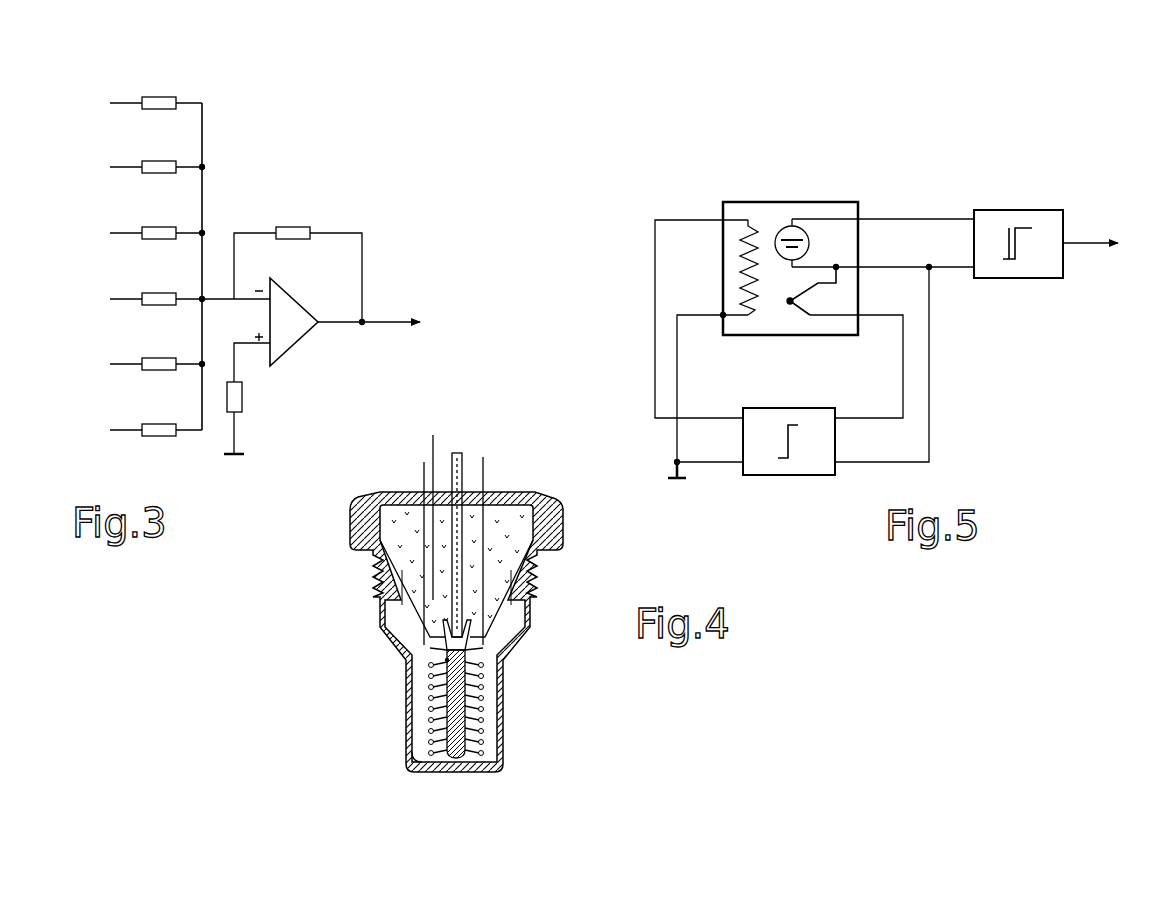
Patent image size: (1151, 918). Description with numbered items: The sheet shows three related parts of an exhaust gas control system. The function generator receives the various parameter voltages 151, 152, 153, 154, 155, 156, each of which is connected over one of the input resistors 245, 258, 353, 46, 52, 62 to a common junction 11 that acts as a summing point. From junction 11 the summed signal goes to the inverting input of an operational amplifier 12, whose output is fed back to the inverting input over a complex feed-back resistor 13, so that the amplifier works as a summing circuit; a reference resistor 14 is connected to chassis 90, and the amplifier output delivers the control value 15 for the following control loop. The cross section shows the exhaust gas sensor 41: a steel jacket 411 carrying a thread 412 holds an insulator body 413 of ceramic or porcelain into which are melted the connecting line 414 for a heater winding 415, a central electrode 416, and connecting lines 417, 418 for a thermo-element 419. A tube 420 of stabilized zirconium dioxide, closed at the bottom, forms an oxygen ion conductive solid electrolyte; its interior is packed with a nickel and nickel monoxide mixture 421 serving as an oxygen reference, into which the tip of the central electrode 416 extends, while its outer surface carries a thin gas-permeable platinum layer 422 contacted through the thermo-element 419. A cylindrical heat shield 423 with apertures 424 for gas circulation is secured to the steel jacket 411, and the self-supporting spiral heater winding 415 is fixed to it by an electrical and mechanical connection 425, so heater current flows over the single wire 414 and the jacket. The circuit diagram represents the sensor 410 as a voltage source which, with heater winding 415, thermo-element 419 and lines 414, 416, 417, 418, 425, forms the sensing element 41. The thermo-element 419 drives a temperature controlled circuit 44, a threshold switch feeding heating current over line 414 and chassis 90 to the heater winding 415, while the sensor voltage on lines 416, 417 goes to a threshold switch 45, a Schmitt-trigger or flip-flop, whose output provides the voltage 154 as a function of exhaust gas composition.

In FIG. 3, the common junction 11 is at (204, 303).
In FIG. 3, the operational amplifier 12 is at (296, 335).
In FIG. 3, the complex feed-back resistor 13 is at (290, 232).
In FIG. 3, the reference resistor 14 is at (243, 398).
In FIG. 3, the control value 15 is at (373, 306).
In FIG. 4, the exhaust gas sensor 41 is at (455, 632).
In FIG. 5, the exhaust gas sensor 41 is at (828, 193).
In FIG. 5, the temperature controlled circuit 44 is at (780, 470).
In FIG. 5, the threshold switch 45 is at (1015, 211).
In FIG. 3, the input resistor 46 is at (158, 297).
In FIG. 3, the input resistor 52 is at (158, 360).
In FIG. 3, the input resistor 62 is at (156, 426).
In FIG. 3, the chassis 90 is at (236, 458).
In FIG. 5, the chassis 90 is at (680, 481).
In FIG. 3, the parameter voltage 151 is at (115, 104).
In FIG. 3, the parameter voltage 152 is at (115, 168).
In FIG. 3, the parameter voltage 153 is at (115, 234).
In FIG. 3, the parameter voltage 154 is at (115, 300).
In FIG. 5, the parameter voltage 154 is at (1112, 247).
In FIG. 3, the parameter voltage 155 is at (115, 365).
In FIG. 3, the parameter voltage 156 is at (115, 431).
In FIG. 3, the input resistor 245 is at (157, 101).
In FIG. 3, the input resistor 258 is at (163, 166).
In FIG. 3, the input resistor 353 is at (160, 232).
In FIG. 5, the sensor 410 is at (790, 226).
In FIG. 4, the steel jacket 411 is at (548, 528).
In FIG. 4, the thread 412 is at (535, 578).
In FIG. 4, the insulator body 413 is at (510, 545).
In FIG. 4, the connecting line 414 is at (483, 470).
In FIG. 5, the connecting line 414 is at (692, 218).
In FIG. 4, the heater winding 415 is at (433, 700).
In FIG. 5, the heater winding 415 is at (745, 270).
In FIG. 4, the central electrode 416 is at (460, 462).
In FIG. 5, the central electrode 416 is at (877, 218).
In FIG. 4, the connecting line 417 is at (436, 451).
In FIG. 5, the connecting line 417 is at (882, 266).
In FIG. 4, the connecting line 418 is at (424, 474).
In FIG. 5, the connecting line 418 is at (884, 315).
In FIG. 4, the thermo-element 419 is at (447, 660).
In FIG. 5, the thermo-element 419 is at (790, 305).
In FIG. 4, the tube 420 is at (466, 655).
In FIG. 4, the mixture 421 is at (455, 686).
In FIG. 4, the platinum layer 422 is at (470, 641).
In FIG. 4, the heat shield 423 is at (410, 727).
In FIG. 5, the heat shield 423 is at (741, 338).
In FIG. 4, the apertures 424 is at (503, 693).
In FIG. 4, the electrical and mechanical connection 425 is at (415, 750).
In FIG. 5, the electrical and mechanical connection 425 is at (728, 312).